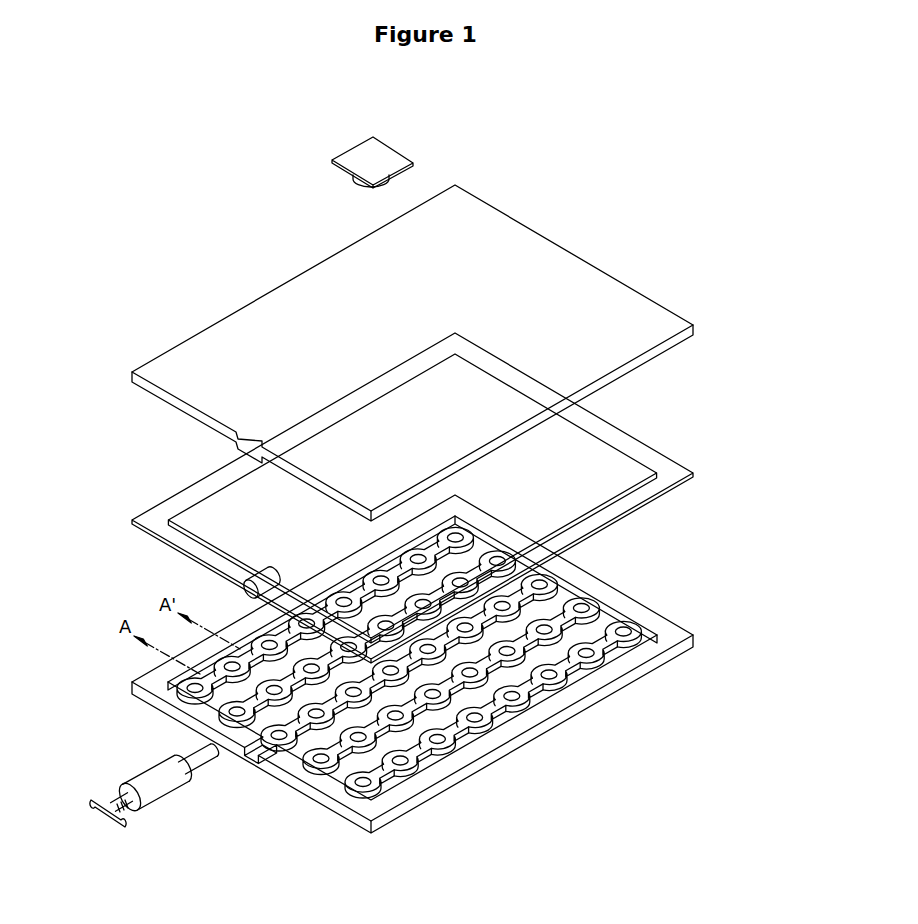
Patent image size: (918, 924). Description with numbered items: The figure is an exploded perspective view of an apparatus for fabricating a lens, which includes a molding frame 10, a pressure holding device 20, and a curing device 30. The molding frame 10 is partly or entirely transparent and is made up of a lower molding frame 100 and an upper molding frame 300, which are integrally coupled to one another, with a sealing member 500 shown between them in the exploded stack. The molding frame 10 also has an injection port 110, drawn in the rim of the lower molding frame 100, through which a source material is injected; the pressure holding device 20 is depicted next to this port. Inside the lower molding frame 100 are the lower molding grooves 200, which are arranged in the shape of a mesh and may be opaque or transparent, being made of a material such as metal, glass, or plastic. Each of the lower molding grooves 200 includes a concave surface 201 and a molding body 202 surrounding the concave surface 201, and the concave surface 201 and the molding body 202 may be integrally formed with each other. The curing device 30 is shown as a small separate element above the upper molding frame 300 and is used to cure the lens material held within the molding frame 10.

The molding frame 10 is at (597, 253).
The pressure holding device 20 is at (176, 806).
The curing device 30 is at (343, 143).
The lower molding frame 100 is at (693, 636).
The injection port 110 is at (246, 764).
The lower molding grooves 200 is at (441, 662).
The concave surface 201 is at (634, 595).
The molding body 202 is at (584, 608).
The upper molding frame 300 is at (694, 327).
The sealing member 500 is at (693, 473).